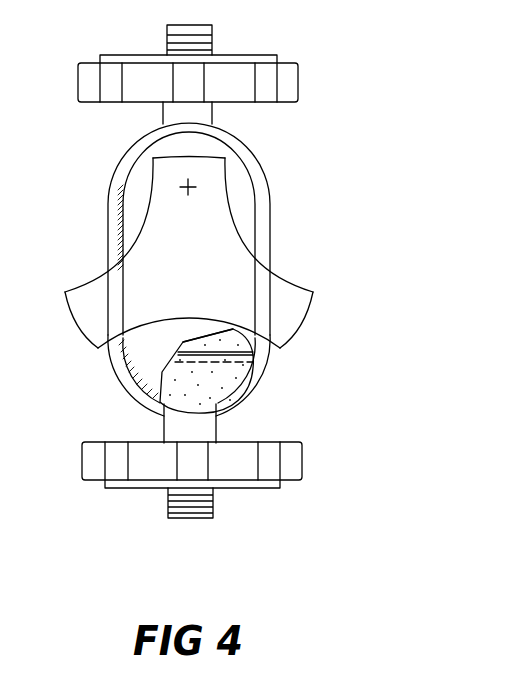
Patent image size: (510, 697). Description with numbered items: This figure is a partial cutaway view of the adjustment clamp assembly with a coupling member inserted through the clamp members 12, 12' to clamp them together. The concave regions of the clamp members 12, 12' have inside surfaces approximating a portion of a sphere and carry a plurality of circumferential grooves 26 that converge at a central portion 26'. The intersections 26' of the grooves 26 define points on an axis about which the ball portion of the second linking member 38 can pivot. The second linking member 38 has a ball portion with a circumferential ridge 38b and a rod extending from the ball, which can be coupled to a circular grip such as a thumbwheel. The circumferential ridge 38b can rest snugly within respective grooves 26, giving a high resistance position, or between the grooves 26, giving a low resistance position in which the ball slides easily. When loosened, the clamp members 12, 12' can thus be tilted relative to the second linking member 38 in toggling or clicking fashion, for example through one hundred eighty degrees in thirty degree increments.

The clamp member 12 is at (227, 269).
The clamp member 12' is at (233, 267).
The grooves 26 is at (234, 374).
The central portion 26' is at (266, 299).
The second linking member 38 is at (175, 430).
The circumferential ridge 38b is at (257, 354).